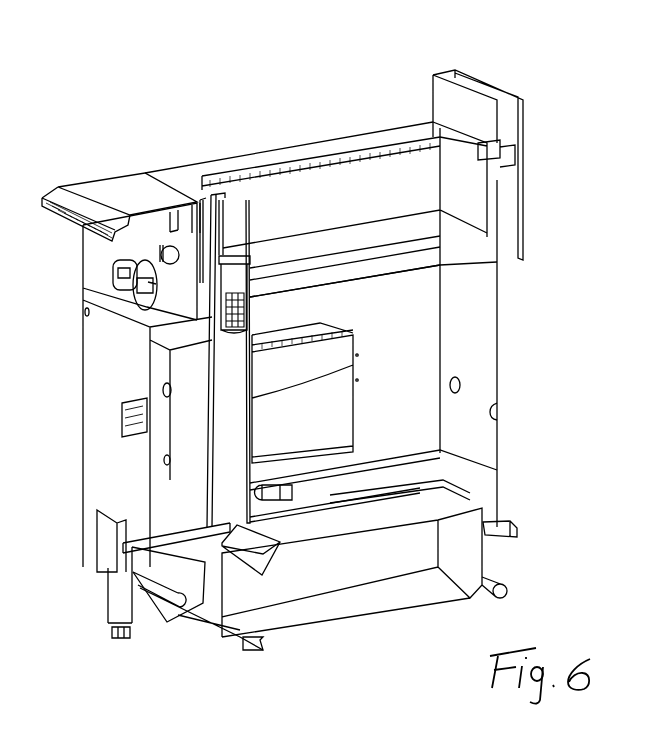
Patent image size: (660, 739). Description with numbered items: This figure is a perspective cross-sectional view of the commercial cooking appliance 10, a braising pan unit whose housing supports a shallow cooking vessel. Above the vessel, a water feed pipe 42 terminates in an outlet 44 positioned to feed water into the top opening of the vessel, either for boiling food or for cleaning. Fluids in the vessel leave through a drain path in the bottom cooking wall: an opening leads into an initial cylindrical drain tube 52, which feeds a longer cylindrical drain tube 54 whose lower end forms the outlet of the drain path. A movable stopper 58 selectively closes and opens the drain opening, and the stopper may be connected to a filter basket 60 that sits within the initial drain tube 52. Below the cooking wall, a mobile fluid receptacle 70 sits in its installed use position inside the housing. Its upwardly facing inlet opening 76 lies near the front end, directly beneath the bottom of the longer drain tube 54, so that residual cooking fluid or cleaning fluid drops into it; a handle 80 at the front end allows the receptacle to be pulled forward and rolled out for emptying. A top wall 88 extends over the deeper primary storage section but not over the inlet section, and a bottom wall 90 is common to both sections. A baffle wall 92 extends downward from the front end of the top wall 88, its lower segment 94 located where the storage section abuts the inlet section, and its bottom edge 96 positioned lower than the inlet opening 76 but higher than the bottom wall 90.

The commercial cooking appliance 10 is at (617, 131).
The water feed pipe 42 is at (487, 143).
The outlet 44 is at (478, 148).
The initial cylindrical drain tube 52 is at (255, 296).
The longer cylindrical drain tube 54 is at (353, 365).
The movable stopper 58 is at (240, 255).
The filter basket 60 is at (248, 312).
The mobile fluid receptacle 70 is at (477, 503).
The inlet opening 76 is at (225, 551).
The handle 80 is at (153, 587).
The top wall 88 is at (382, 513).
The bottom wall 90 is at (377, 607).
The baffle wall 92 is at (263, 553).
The lower segment 94 is at (197, 559).
The bottom edge 96 is at (250, 572).